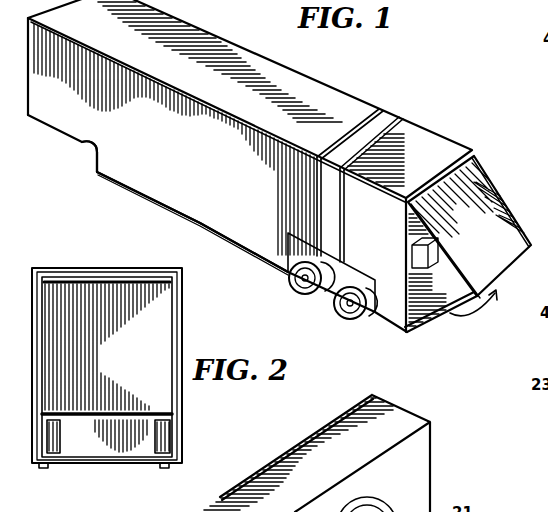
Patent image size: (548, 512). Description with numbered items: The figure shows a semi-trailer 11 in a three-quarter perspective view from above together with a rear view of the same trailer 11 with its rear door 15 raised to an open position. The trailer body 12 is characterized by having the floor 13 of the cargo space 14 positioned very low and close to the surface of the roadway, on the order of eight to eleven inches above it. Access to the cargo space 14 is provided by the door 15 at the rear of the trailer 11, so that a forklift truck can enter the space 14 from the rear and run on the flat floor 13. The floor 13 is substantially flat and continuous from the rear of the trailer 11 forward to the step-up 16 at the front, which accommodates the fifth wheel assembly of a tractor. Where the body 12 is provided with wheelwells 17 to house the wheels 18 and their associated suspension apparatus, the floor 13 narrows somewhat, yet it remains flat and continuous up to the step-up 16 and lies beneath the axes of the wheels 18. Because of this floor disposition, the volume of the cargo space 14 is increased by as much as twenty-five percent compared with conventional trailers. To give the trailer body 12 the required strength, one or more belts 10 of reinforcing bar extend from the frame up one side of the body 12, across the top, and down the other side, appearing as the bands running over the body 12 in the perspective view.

In FIG. 1, the belts of reinforcing bar 10 is at (313, 184).
In FIG. 1, the trailer 11 is at (354, 97).
In FIG. 2, the trailer 11 is at (182, 308).
In FIG. 1, the trailer body 12 is at (232, 237).
In FIG. 2, the trailer body 12 is at (199, 329).
In FIG. 1, the floor 13 is at (428, 317).
In FIG. 2, the floor 13 is at (112, 459).
In FIG. 1, the cargo space 14 is at (430, 292).
In FIG. 2, the cargo space 14 is at (116, 368).
In FIG. 1, the door 15 is at (478, 188).
In FIG. 2, the door 15 is at (127, 279).
In FIG. 1, the step-up 16 is at (86, 150).
In FIG. 2, the step-up 16 is at (122, 397).
In FIG. 1, the wheelwells 17 is at (438, 252).
In FIG. 2, the wheelwells 17 is at (47, 428).
In FIG. 1, the wheels 18 is at (338, 309).
In FIG. 2, the wheels 18 is at (44, 469).